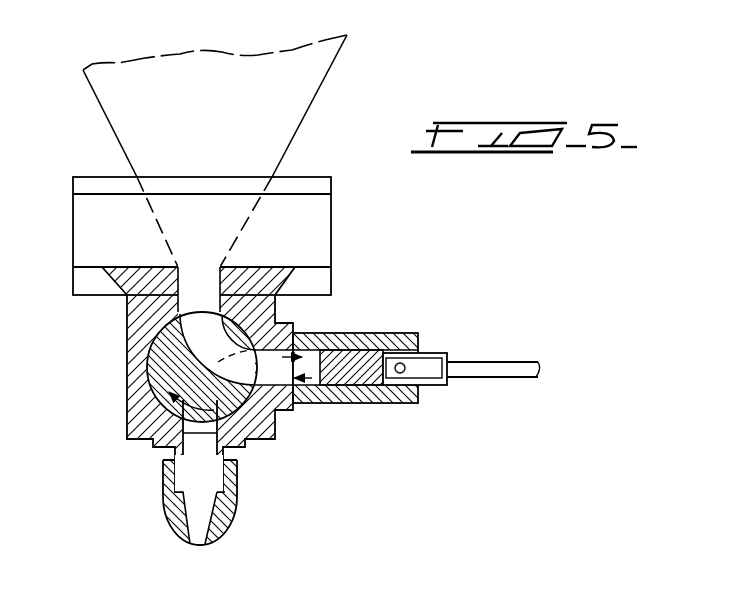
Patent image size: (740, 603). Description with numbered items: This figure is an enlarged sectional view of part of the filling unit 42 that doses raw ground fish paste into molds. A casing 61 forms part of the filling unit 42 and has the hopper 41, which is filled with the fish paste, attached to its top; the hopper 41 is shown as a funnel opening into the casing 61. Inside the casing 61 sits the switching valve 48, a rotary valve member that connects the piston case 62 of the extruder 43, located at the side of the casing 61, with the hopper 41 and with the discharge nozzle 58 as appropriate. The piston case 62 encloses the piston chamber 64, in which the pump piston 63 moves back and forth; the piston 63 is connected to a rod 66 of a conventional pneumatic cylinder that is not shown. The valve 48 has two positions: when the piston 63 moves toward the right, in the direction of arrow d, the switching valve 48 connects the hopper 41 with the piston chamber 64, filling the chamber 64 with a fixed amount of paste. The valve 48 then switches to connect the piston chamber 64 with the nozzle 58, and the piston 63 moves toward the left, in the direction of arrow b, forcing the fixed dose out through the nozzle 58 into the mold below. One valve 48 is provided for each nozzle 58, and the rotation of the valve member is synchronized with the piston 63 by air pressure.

The hopper 41 is at (322, 88).
The filling unit 42 is at (132, 465).
The extruder 43 is at (436, 319).
The switching valve 48 is at (158, 368).
The filling nozzle 58 is at (233, 515).
The casing 61 is at (139, 305).
The piston case 62 is at (370, 334).
The pump piston 63 is at (345, 378).
The piston chamber 64 is at (289, 357).
The rod 66 is at (509, 372).